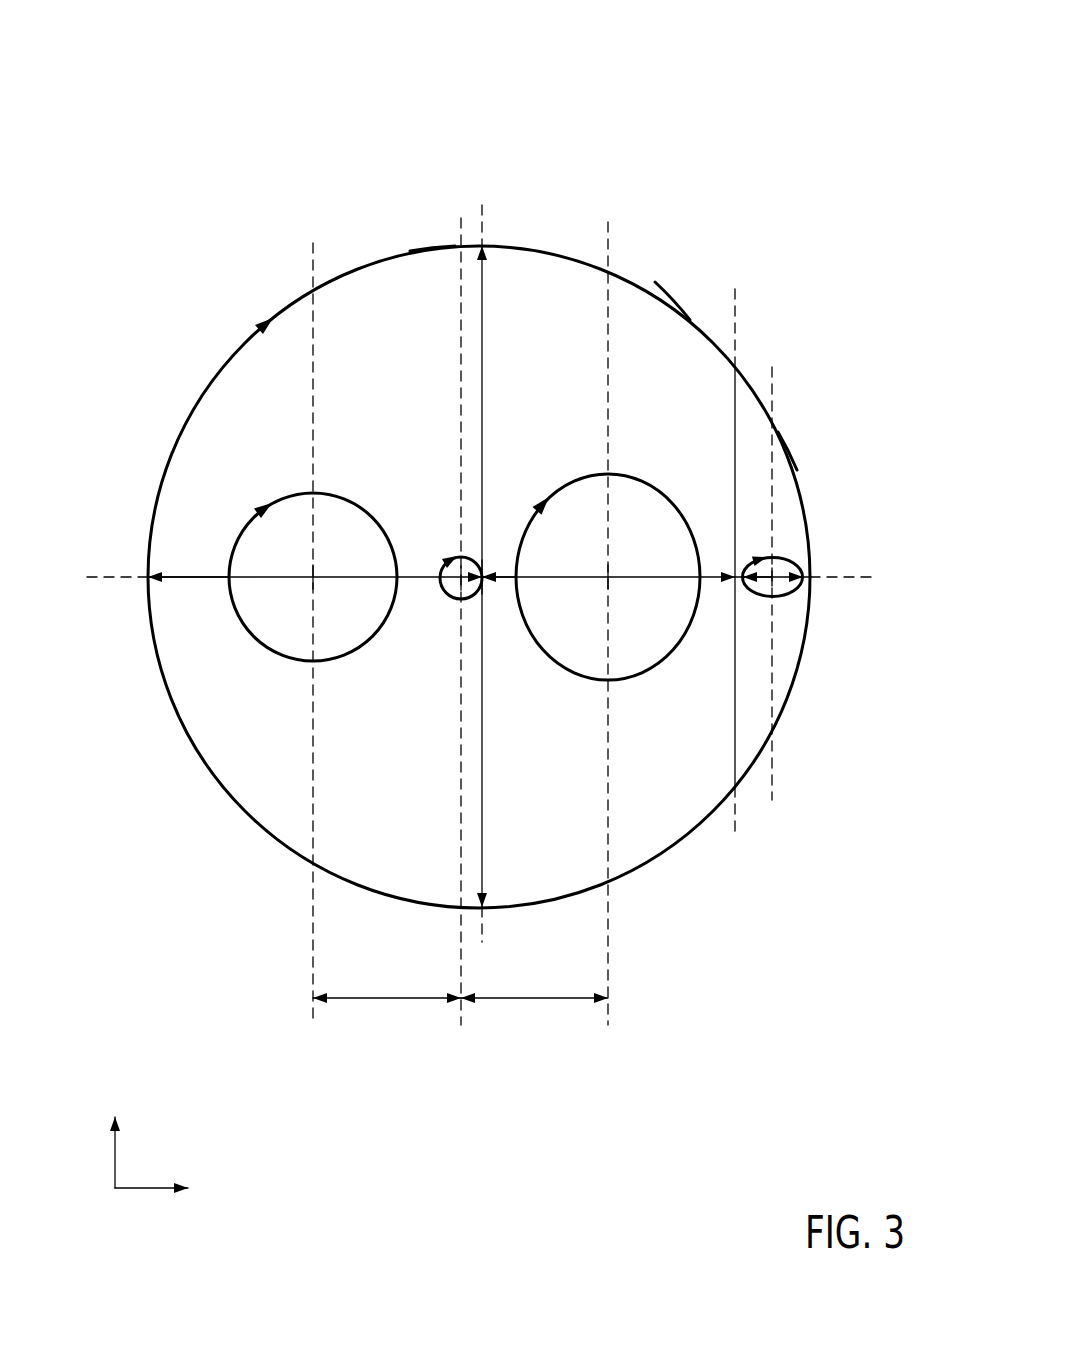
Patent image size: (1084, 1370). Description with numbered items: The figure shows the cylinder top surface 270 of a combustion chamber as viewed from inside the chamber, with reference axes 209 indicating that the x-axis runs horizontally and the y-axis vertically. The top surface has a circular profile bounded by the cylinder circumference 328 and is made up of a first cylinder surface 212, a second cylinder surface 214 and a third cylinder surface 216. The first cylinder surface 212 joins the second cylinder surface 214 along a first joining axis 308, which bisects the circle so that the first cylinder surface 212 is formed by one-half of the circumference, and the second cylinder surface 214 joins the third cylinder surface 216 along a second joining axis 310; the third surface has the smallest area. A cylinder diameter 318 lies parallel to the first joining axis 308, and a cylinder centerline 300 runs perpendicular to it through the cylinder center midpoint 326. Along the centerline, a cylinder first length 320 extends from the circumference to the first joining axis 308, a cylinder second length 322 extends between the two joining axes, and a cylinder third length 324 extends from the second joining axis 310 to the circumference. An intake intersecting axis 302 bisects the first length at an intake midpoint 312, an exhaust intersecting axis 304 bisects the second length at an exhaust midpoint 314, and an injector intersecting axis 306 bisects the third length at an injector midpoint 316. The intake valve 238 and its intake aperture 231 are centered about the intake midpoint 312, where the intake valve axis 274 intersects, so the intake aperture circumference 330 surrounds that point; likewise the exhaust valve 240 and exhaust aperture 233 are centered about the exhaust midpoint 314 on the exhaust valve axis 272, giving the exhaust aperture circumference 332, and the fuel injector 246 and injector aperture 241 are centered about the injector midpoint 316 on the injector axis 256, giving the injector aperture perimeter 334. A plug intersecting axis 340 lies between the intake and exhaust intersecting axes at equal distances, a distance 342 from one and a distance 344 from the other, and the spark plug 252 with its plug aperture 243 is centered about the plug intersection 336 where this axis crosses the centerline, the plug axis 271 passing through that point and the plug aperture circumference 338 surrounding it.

The cylinder top surface 270 is at (312, 118).
The reference axes 209 is at (125, 1190).
The first cylinder surface 212 is at (432, 250).
The second cylinder surface 214 is at (673, 305).
The third cylinder surface 216 is at (790, 455).
The intake aperture 231 is at (301, 555).
The intake valve 238 is at (308, 492).
The exhaust aperture 233 is at (623, 554).
The exhaust valve 240 is at (615, 478).
The injector aperture 241 is at (824, 555).
The fuel injector 246 is at (800, 560).
The plug aperture 243 is at (427, 539).
The spark plug 252 is at (468, 557).
The injector axis 256 is at (828, 625).
The injector midpoint 316 is at (774, 580).
The plug axis 271 is at (422, 615).
The plug intersection 336 is at (457, 584).
The exhaust valve axis 272 is at (659, 639).
The exhaust midpoint 314 is at (612, 580).
The intake valve axis 274 is at (354, 641).
The intake midpoint 312 is at (313, 585).
The cylinder centerline 300 is at (128, 577).
The intake intersecting axis 302 is at (313, 425).
The exhaust intersecting axis 304 is at (608, 385).
The injector intersecting axis 306 is at (772, 660).
The first joining axis 308 is at (482, 205).
The second joining axis 310 is at (735, 300).
The cylinder diameter 318 is at (484, 340).
The cylinder first length 320 is at (182, 580).
The cylinder second length 322 is at (520, 598).
The cylinder third length 324 is at (757, 585).
The cylinder center midpoint 326 is at (487, 570).
The cylinder circumference 328 is at (243, 345).
The intake aperture circumference 330 is at (258, 505).
The exhaust aperture circumference 332 is at (537, 518).
The injector aperture perimeter 334 is at (757, 560).
The plug aperture circumference 338 is at (446, 560).
The plug intersecting axis 340 is at (461, 218).
The distance 342 is at (350, 1000).
The distance 344 is at (508, 1000).